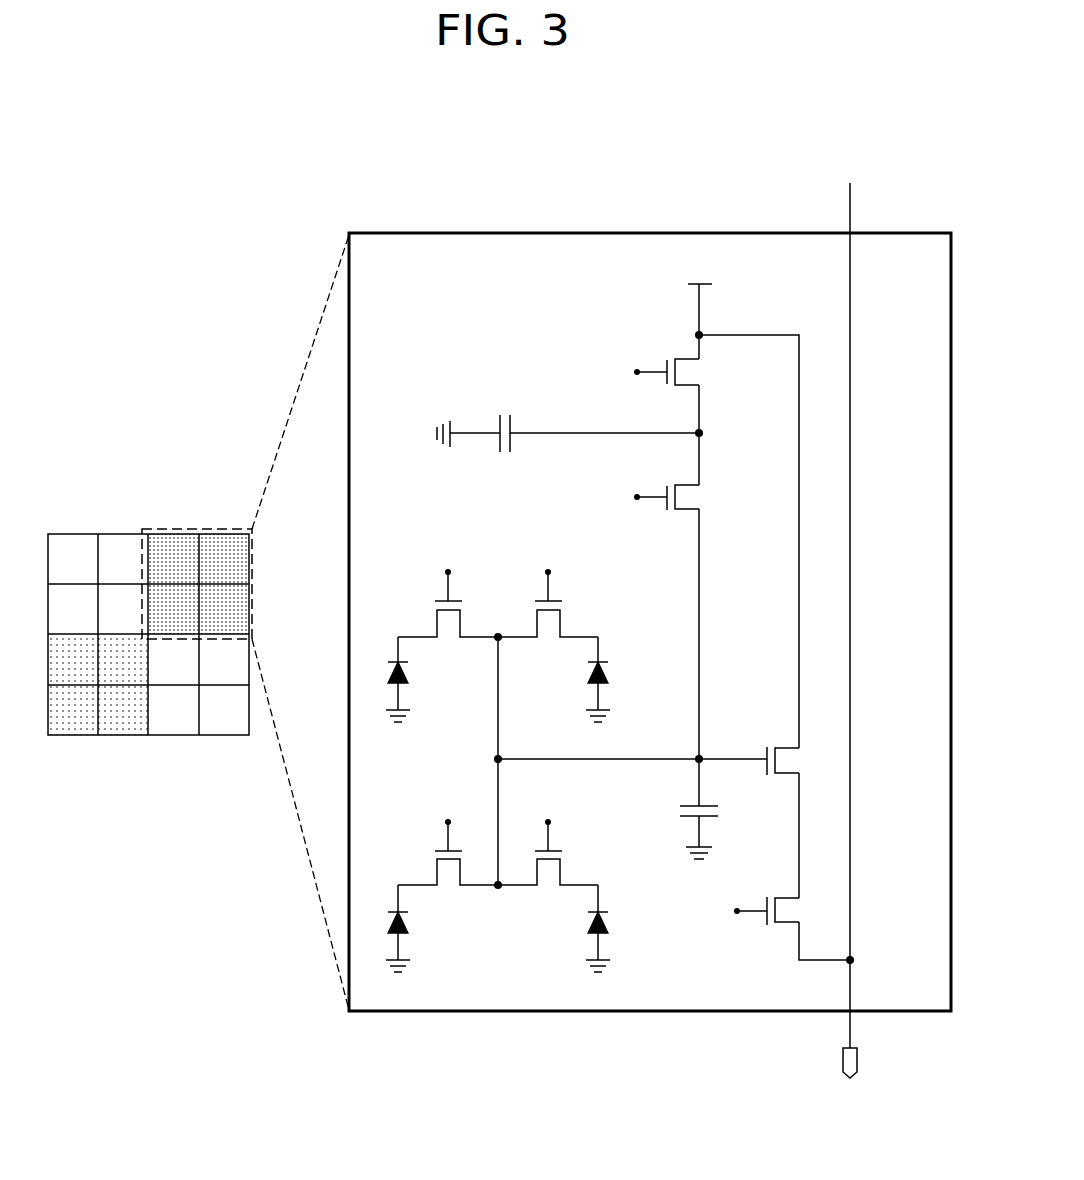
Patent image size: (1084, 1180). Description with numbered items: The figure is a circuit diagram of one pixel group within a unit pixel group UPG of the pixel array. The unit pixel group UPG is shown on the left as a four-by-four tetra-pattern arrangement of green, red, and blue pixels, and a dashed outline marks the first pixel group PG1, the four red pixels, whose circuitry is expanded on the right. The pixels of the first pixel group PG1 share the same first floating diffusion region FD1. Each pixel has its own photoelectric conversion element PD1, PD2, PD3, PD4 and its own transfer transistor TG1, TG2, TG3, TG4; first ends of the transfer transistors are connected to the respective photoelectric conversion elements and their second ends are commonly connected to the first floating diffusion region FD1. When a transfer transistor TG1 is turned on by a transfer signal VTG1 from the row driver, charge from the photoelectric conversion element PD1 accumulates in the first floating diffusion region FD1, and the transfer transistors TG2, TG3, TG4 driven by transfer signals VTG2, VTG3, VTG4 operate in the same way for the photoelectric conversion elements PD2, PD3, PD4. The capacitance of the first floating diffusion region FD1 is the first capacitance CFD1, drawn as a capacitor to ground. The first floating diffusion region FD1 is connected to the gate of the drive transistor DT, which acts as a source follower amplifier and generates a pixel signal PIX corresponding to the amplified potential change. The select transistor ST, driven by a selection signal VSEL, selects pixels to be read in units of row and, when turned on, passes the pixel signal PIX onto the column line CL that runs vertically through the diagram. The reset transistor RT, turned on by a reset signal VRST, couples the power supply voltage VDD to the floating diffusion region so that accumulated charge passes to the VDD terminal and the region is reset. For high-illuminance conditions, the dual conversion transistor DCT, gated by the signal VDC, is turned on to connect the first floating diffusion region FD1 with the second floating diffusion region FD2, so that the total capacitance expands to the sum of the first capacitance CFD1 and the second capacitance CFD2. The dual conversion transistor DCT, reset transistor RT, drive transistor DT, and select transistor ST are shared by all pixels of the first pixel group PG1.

The unit pixel group UPG is at (127, 503).
The first pixel group PG1 is at (206, 528).
The column line CL is at (851, 614).
The pixel signal PIX is at (842, 1080).
The power supply voltage VDD is at (697, 298).
The reset transistor RT is at (696, 372).
The reset signal VRST is at (624, 374).
The second floating diffusion region FD2 is at (625, 436).
The second capacitance CFD2 is at (482, 449).
The dual conversion transistor DCT is at (703, 497).
The dual conversion signal VDC is at (630, 498).
The transfer transistor TG1 is at (440, 619).
The transfer transistor TG2 is at (557, 619).
The transfer transistor TG3 is at (440, 868).
The transfer transistor TG4 is at (557, 868).
The transfer signal VTG1 is at (448, 575).
The transfer signal VTG2 is at (548, 575).
The transfer signal VTG3 is at (448, 825).
The transfer signal VTG4 is at (548, 825).
The photoelectric conversion element PD1 is at (421, 679).
The photoelectric conversion element PD2 is at (577, 679).
The photoelectric conversion element PD3 is at (418, 928).
The photoelectric conversion element PD4 is at (576, 928).
The first floating diffusion region FD1 is at (632, 746).
The drive transistor DT is at (799, 761).
The first capacitance CFD1 is at (727, 831).
The select transistor ST is at (798, 911).
The selection signal VSEL is at (726, 914).